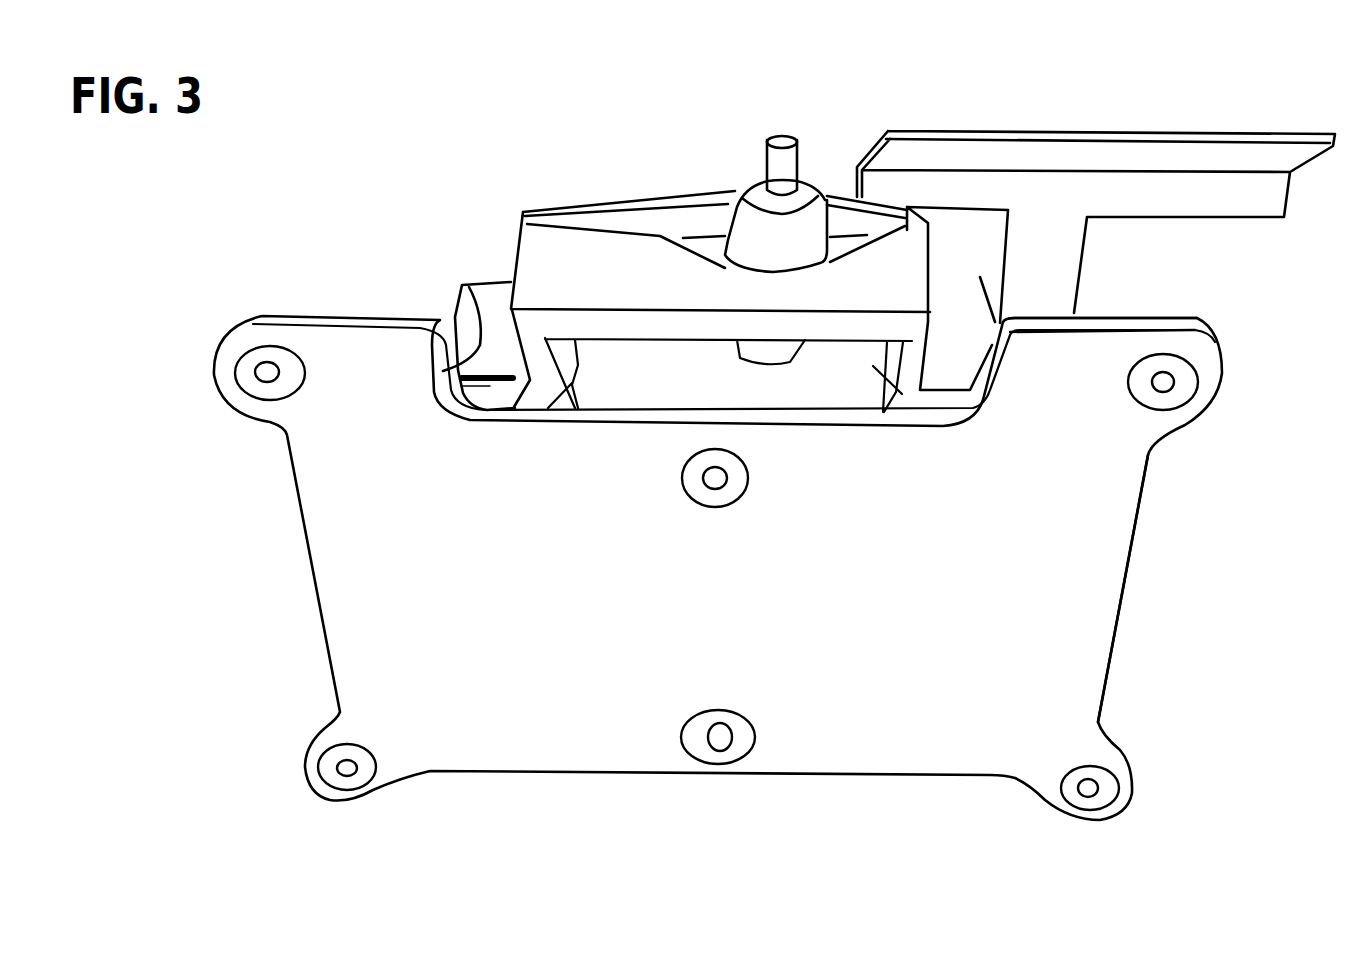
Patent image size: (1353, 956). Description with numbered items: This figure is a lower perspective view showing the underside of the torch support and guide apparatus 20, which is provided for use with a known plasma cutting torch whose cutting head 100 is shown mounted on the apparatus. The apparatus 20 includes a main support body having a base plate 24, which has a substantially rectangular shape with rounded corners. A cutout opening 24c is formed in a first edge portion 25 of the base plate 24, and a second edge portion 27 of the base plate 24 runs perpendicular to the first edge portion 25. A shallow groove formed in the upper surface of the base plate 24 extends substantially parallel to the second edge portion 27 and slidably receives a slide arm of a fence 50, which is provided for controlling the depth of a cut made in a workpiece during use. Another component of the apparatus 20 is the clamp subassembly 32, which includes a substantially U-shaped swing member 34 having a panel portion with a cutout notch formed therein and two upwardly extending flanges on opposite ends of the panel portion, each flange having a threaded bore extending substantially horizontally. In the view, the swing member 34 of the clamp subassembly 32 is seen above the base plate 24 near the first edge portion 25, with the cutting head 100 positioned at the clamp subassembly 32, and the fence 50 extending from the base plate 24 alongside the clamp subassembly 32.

The torch support and guide apparatus 20 is at (230, 723).
The base plate 24 is at (962, 597).
The cutout opening 24c is at (469, 285).
The first edge portion 25 is at (1104, 330).
The second edge portion 27 is at (1123, 588).
The clamp subassembly 32 is at (656, 166).
The swing member 34 is at (605, 292).
The fence 50 is at (1098, 102).
The cutting head 100 is at (776, 204).